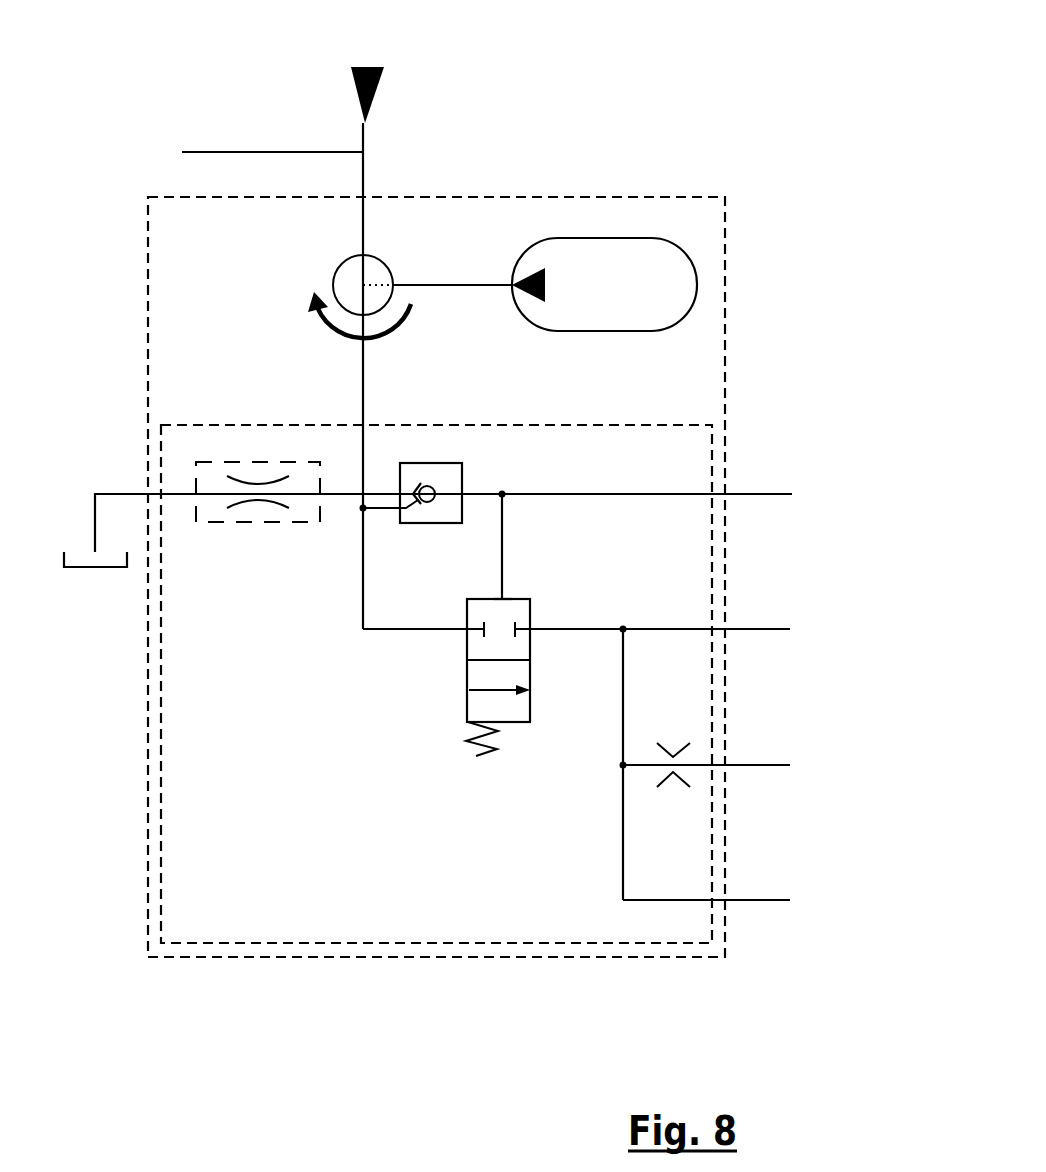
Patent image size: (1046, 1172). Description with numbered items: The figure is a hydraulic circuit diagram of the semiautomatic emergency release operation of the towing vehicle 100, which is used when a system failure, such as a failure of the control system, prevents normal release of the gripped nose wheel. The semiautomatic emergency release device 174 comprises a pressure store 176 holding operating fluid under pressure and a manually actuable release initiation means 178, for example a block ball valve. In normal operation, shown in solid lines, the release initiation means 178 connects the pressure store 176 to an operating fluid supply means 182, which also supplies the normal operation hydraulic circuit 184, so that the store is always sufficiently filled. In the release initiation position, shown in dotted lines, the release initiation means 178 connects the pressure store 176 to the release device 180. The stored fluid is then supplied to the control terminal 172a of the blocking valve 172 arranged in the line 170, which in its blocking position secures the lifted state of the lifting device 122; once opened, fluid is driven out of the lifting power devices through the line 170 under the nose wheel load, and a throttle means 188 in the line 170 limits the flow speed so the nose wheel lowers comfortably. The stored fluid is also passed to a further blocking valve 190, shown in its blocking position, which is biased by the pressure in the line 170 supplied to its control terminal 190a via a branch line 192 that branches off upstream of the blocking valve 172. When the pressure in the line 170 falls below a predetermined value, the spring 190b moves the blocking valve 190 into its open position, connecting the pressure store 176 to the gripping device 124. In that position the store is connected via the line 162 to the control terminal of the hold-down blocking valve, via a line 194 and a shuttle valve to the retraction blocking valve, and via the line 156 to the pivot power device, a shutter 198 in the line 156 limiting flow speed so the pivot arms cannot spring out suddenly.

The towing vehicle 100 is at (680, 94).
The lifting device 122 is at (462, 520).
The gripping device 124 is at (740, 764).
The line 156 is at (757, 765).
The line 162 is at (757, 900).
The line 170 is at (757, 494).
The blocking valve 172 is at (456, 517).
The control terminal 172a is at (416, 508).
The semiautomatic emergency release device 174 is at (288, 957).
The pressure store 176 is at (602, 260).
The release initiation means 178 is at (378, 272).
The release device 180 is at (538, 943).
The operating fluid supply means 182 is at (352, 76).
The normal operation hydraulic circuit 184 is at (248, 152).
The throttle means 188 is at (257, 512).
The blocking valve 190 is at (489, 685).
The control terminal 190a is at (503, 597).
The spring 190b is at (468, 747).
The branch line 192 is at (502, 523).
The line 194 is at (757, 629).
The shutter 198 is at (675, 777).